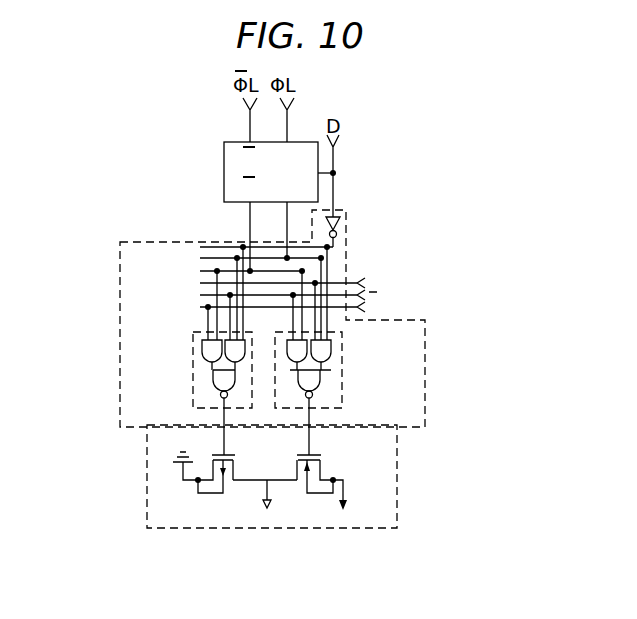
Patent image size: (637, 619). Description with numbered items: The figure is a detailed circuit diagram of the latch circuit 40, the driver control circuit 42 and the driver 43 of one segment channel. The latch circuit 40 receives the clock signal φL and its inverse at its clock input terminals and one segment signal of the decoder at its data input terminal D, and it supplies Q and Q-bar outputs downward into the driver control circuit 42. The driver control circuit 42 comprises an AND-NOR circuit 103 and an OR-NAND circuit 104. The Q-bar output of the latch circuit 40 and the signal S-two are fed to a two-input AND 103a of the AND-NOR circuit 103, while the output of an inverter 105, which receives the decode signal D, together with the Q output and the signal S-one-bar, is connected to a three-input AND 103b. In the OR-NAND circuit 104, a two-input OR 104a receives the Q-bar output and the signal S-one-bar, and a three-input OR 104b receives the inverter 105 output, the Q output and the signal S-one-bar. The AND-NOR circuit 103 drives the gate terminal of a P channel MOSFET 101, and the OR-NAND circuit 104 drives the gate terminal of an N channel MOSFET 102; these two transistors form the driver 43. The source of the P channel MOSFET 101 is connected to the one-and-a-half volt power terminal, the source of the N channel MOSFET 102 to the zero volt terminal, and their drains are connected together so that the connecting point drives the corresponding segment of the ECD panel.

The latch circuit 40 is at (224, 170).
The driver control circuit 42 is at (329, 331).
The driver 43 is at (272, 499).
The P channel MOSFET 101 is at (237, 470).
The N channel MOSFET 102 is at (326, 467).
The AND-NOR circuit 103 is at (193, 368).
The 2-input AND 103a is at (205, 352).
The 3-input AND 103b is at (237, 340).
The OR-NAND circuit 104 is at (321, 359).
The 2-input OR 104a is at (290, 350).
The 3-input OR 104b is at (328, 353).
The inverter 105 is at (340, 224).